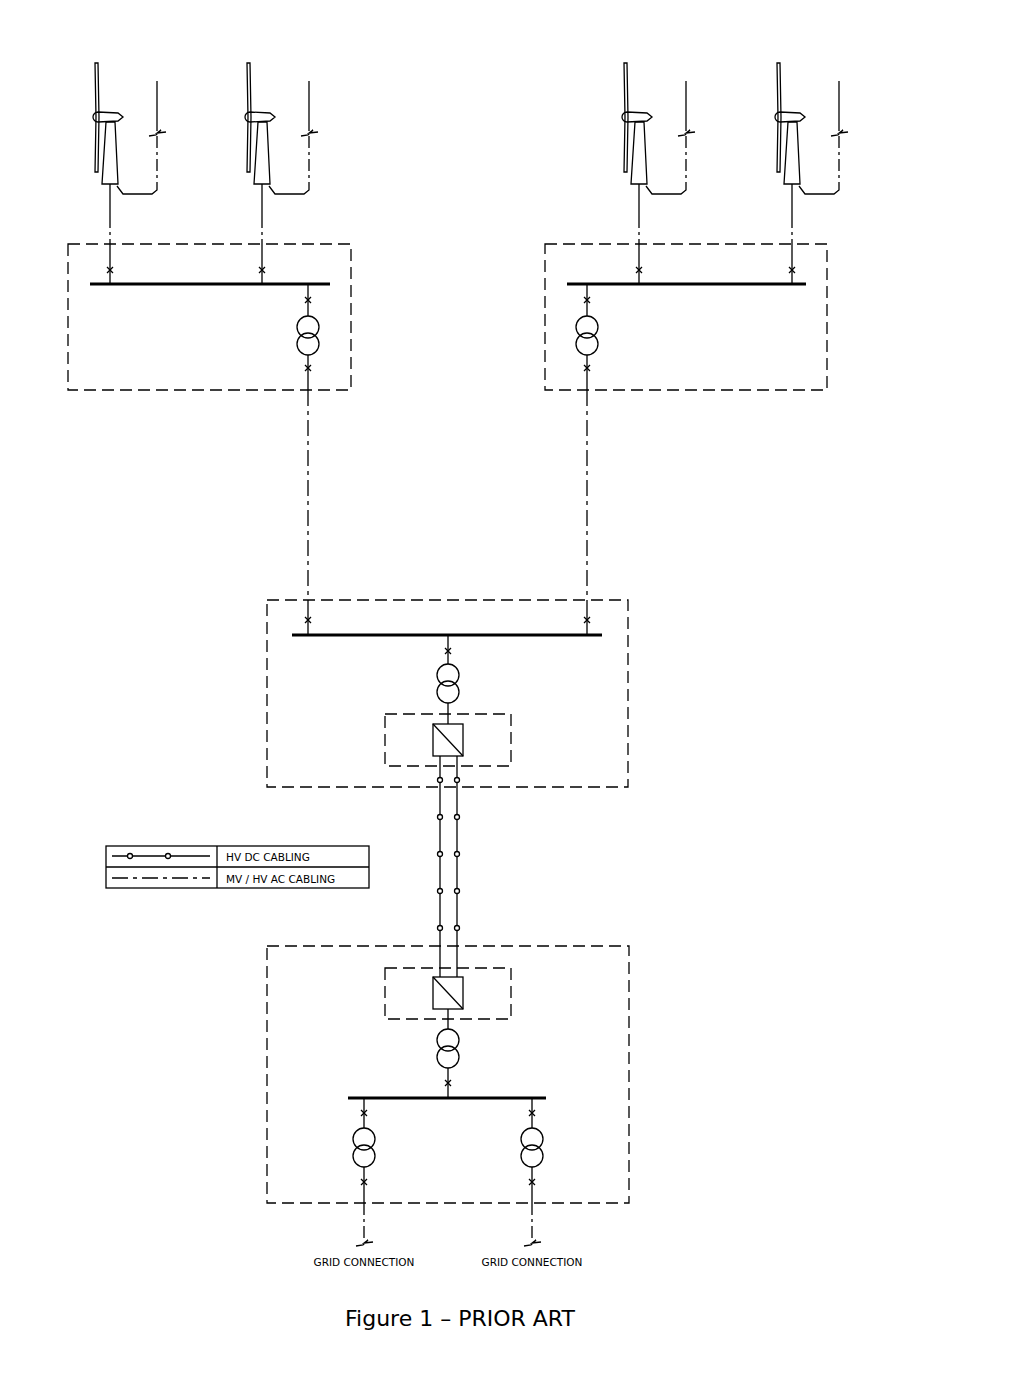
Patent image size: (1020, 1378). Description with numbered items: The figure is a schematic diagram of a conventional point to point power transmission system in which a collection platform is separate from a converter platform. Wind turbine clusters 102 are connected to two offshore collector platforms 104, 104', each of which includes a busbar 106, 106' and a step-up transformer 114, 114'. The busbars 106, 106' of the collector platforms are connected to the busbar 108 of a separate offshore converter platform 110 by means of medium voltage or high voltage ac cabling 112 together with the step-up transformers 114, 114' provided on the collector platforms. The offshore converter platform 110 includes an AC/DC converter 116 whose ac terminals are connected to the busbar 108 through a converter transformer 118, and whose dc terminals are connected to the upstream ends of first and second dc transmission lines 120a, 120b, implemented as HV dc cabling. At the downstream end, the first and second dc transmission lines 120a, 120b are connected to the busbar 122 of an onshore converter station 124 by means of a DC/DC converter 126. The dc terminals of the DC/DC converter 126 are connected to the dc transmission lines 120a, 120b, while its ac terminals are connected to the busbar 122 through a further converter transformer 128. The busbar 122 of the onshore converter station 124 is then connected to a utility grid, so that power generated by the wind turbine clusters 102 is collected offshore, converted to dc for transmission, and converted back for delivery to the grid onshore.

The wind turbine clusters 102 is at (122, 96).
The offshore collector platform 104 is at (209, 348).
The offshore collector platform 104' is at (686, 348).
The busbar 106 is at (238, 228).
The busbar 106' is at (671, 218).
The busbar 108 is at (497, 633).
The offshore converter platform 110 is at (630, 738).
The MV or HV ac cabling 112 is at (308, 445).
The step-up transformer 114 is at (362, 337).
The step-up transformer 114' is at (532, 337).
The AC/DC converter 116 is at (487, 766).
The converter transformer 118 is at (421, 686).
The first dc transmission line 120a is at (440, 832).
The second dc transmission line 120b is at (457, 870).
The busbar 122 is at (389, 1097).
The onshore converter station 124 is at (630, 987).
The DC/DC converter 126 is at (408, 960).
The converter transformer 128 is at (469, 1046).